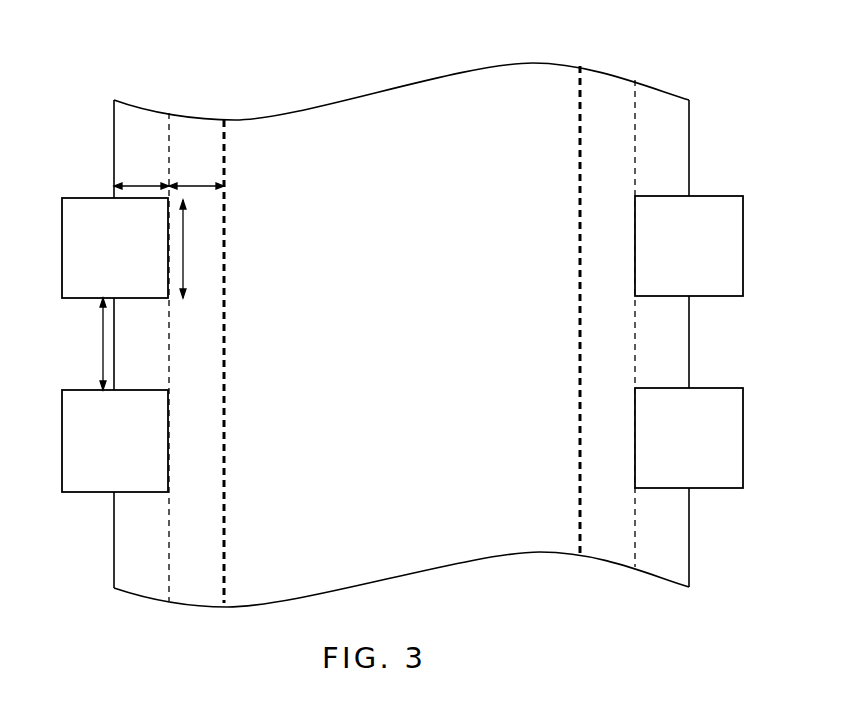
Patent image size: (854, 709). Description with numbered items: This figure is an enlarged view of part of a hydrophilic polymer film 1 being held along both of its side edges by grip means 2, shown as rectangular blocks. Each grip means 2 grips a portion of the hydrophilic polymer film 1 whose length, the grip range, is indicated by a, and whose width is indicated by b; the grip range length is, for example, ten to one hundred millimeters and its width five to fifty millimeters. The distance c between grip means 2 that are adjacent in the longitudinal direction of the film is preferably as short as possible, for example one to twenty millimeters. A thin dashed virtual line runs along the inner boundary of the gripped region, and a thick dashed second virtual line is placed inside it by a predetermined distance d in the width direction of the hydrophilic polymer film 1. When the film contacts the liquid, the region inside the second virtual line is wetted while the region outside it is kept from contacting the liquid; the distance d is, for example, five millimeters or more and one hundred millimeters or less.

The hydrophilic polymer film 1 is at (591, 80).
The grip means 2 is at (74, 229).
The grip range length a is at (190, 249).
The grip range width b is at (141, 178).
The distance between adjacent grip means c is at (97, 344).
The predetermined distance d is at (196, 178).